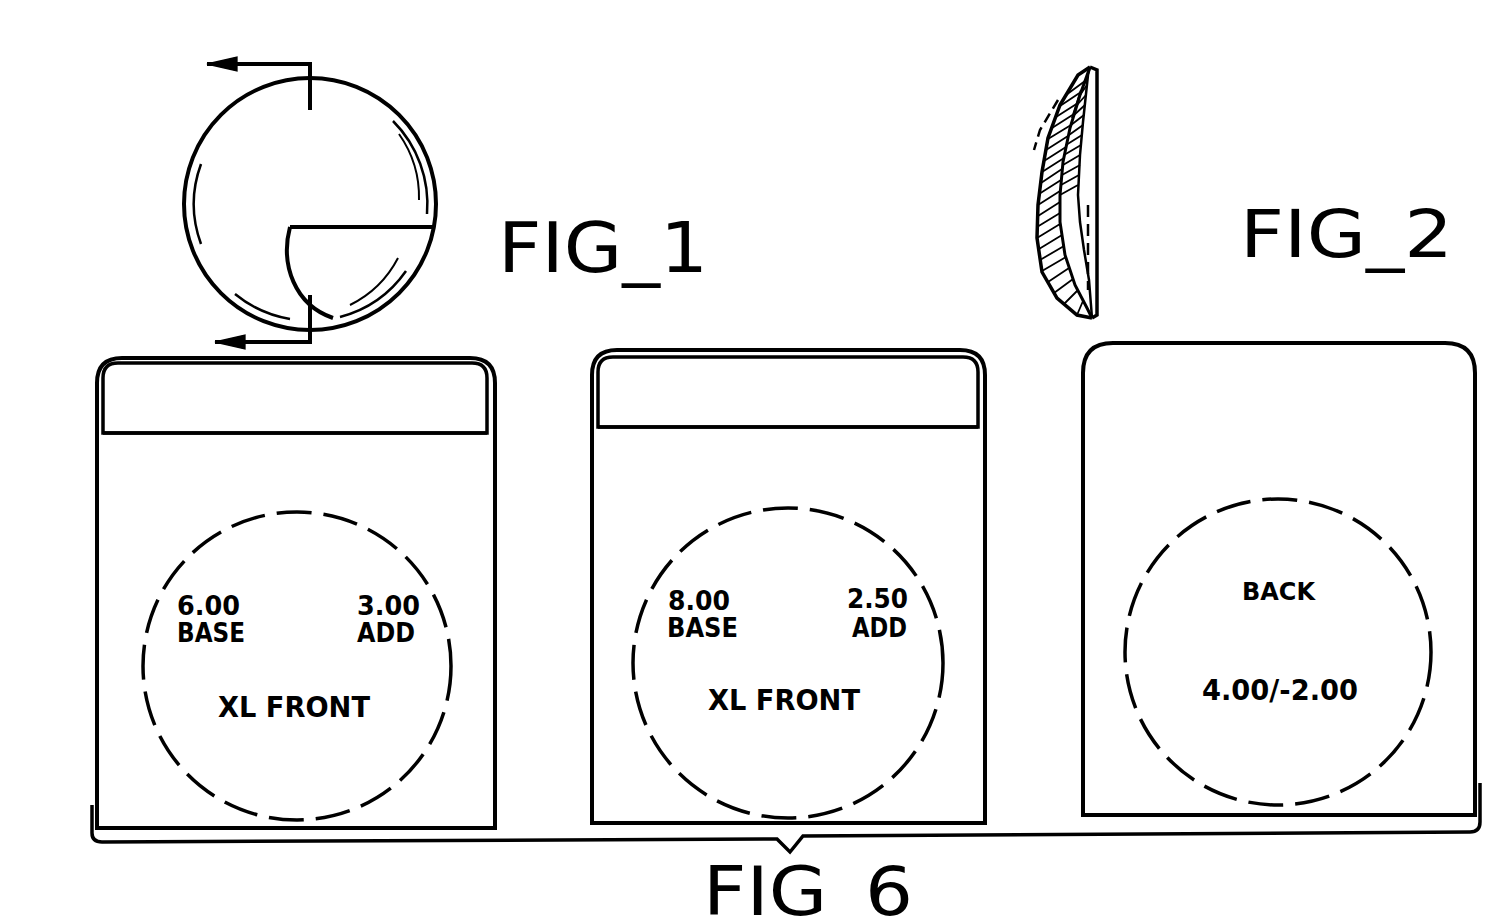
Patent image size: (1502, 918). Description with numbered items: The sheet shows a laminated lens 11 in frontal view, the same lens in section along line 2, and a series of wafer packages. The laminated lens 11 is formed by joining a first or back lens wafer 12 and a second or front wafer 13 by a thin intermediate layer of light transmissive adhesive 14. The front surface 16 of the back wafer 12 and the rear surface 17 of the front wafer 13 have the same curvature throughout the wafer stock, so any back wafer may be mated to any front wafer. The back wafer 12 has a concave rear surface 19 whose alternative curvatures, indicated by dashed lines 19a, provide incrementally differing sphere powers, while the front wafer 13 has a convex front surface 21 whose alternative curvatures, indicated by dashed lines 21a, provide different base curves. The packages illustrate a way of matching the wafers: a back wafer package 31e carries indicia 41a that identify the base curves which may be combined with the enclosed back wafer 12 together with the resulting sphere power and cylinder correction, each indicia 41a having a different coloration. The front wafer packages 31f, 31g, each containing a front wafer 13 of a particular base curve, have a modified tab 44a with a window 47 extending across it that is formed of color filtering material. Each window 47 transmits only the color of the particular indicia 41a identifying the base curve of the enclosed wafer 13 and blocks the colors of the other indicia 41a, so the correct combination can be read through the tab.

In FIG. 1, the section line 2- 2 is at (239, 202).
In FIG. 1, the laminated lens 11 is at (430, 124).
In FIG. 2, the laminated lens 11 is at (983, 118).
In FIG. 2, the back lens wafer 12 is at (1087, 177).
In FIG. 6, the back lens wafer 12 is at (1205, 500).
In FIG. 1, the front wafer 13 is at (290, 166).
In FIG. 2, the front wafer 13 is at (1042, 170).
In FIG. 6, the front wafer 13 is at (245, 517).
In FIG. 2, the intermediate layer of light transmissive adhesive 14 is at (1070, 120).
In FIG. 2, the front surface of back wafer 16 is at (1038, 190).
In FIG. 2, the rear surface of front wafer 17 is at (1078, 145).
In FIG. 2, the rear surface of back wafer 19 is at (1095, 199).
In FIG. 2, the dashed lines 19a is at (1095, 250).
In FIG. 2, the front convex surface of front wafer 21 is at (1040, 210).
In FIG. 2, the dashed lines 21a is at (1053, 102).
In FIG. 6, the back wafer package 31e is at (1077, 700).
In FIG. 6, the front wafer package 31f is at (510, 690).
In FIG. 6, the front wafer package 31g is at (585, 600).
In FIG. 6, the indicia 41a is at (1172, 352).
In FIG. 6, the tab 44a is at (398, 357).
In FIG. 6, the window 47 is at (427, 390).